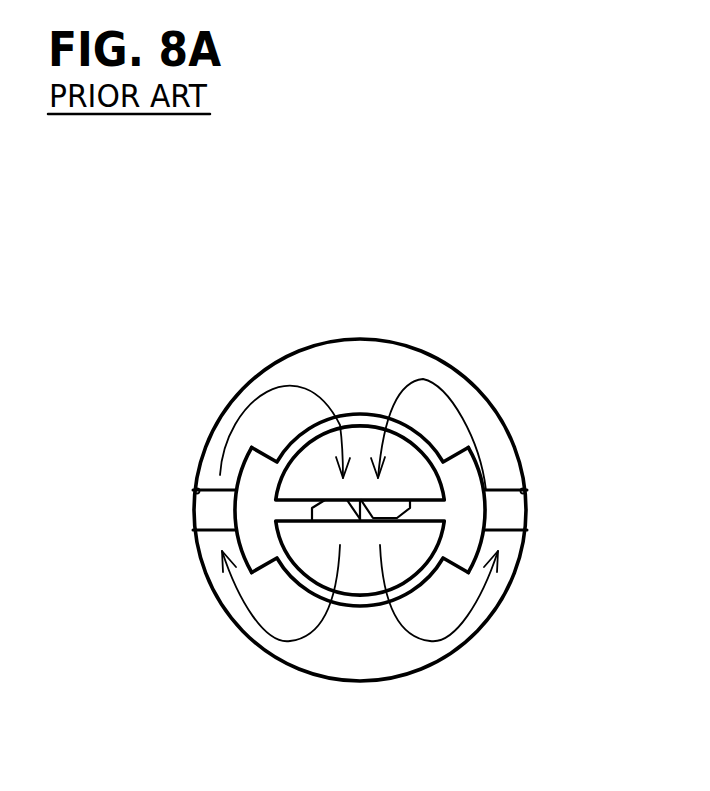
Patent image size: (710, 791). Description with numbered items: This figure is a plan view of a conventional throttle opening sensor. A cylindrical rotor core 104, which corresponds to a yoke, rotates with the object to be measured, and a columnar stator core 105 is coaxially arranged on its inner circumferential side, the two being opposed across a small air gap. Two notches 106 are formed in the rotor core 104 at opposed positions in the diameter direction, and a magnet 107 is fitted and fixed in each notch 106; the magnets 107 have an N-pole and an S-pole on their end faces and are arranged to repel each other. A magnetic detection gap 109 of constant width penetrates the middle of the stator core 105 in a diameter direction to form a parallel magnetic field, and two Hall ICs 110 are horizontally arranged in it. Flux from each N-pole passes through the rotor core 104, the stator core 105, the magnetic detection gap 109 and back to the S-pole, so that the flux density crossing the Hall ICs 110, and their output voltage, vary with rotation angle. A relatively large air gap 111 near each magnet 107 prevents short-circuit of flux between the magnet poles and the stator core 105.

The rotor core 104 is at (353, 346).
The stator core 105 is at (430, 414).
The notch 106 is at (190, 488).
The magnet 107 is at (206, 516).
The magnetic detection gap 109 is at (280, 508).
The Hall IC 110 is at (373, 503).
The air gap 111 is at (253, 542).